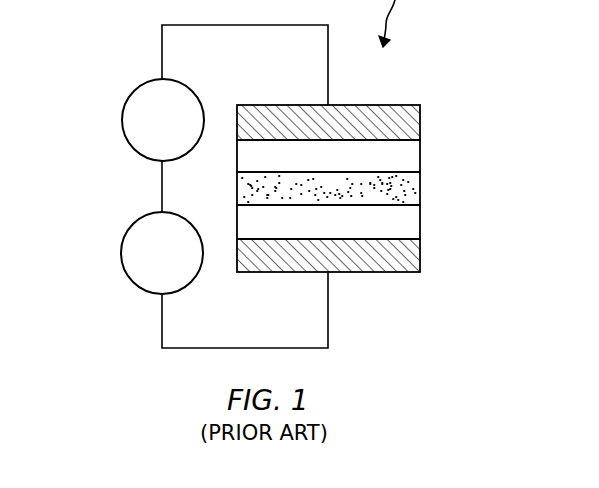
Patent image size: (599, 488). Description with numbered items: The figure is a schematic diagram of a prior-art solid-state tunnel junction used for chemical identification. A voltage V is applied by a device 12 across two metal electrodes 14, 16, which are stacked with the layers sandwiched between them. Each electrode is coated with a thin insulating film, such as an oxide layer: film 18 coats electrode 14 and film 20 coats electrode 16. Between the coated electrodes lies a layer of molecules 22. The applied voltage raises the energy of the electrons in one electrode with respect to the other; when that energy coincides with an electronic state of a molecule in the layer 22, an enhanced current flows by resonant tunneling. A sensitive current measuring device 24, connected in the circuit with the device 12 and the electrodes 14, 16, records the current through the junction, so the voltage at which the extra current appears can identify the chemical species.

The voltage applying device 12 is at (122, 121).
The current measuring device 24 is at (121, 255).
The metal electrode 14 is at (420, 122).
The thin insulating film 18 is at (420, 156).
The layer of molecules 22 is at (420, 189).
The thin insulating film 20 is at (420, 222).
The metal electrode 16 is at (420, 256).